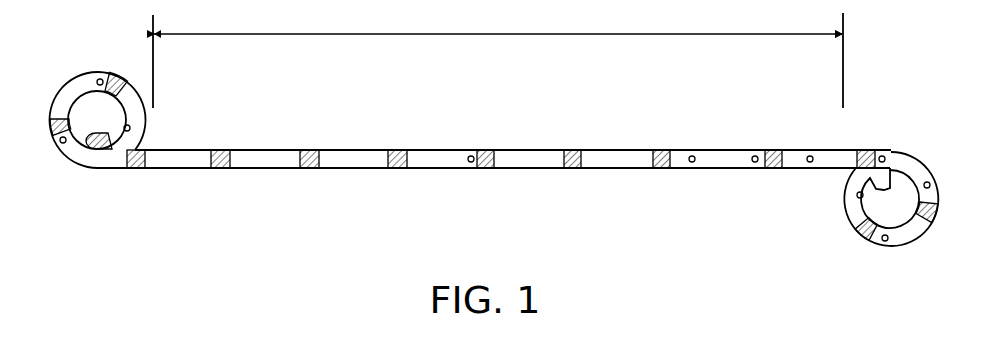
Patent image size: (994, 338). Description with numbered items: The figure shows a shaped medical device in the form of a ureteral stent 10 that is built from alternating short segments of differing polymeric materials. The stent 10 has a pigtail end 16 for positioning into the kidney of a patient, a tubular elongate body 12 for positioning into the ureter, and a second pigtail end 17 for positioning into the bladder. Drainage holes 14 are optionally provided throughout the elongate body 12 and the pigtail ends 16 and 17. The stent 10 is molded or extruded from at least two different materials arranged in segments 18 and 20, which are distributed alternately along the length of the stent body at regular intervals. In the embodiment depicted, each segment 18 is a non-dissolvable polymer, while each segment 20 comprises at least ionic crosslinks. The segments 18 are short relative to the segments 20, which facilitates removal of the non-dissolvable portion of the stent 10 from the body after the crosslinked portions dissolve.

The ureteral stent 10 is at (494, 148).
The tubular elongate body 12 is at (498, 57).
The drainage holes 14 is at (133, 129).
The pigtail end 16 is at (851, 260).
The second pigtail end 17 is at (91, 60).
The segment 18 is at (576, 149).
The segment 20 is at (442, 157).